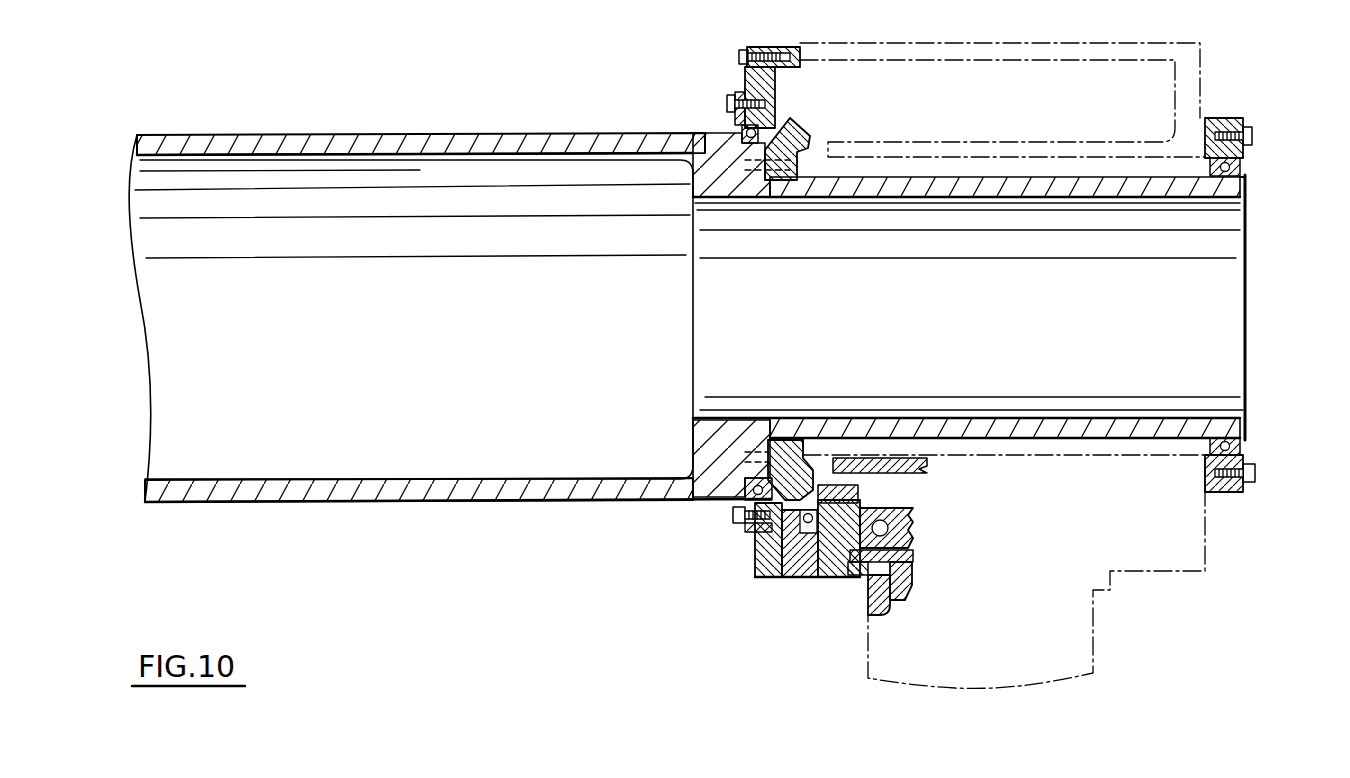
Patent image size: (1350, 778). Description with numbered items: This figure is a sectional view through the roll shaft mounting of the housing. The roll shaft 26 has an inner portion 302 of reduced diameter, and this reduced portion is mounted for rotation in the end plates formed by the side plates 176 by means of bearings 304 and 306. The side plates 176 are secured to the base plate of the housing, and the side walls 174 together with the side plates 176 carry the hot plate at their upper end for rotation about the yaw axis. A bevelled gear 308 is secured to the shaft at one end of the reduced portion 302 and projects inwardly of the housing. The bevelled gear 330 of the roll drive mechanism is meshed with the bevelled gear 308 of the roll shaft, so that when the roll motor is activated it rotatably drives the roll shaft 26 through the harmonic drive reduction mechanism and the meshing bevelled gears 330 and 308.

The roll shaft 26 is at (460, 133).
The inner portion of reduced diameter 302 is at (988, 199).
The bevelled gear 308 is at (797, 128).
The bearing 304 is at (745, 480).
The side plates 176 is at (1230, 118).
The bearing 306 is at (1241, 446).
The side walls 174 is at (803, 570).
The bevelled gear of the roll drive mechanism 330 is at (858, 489).